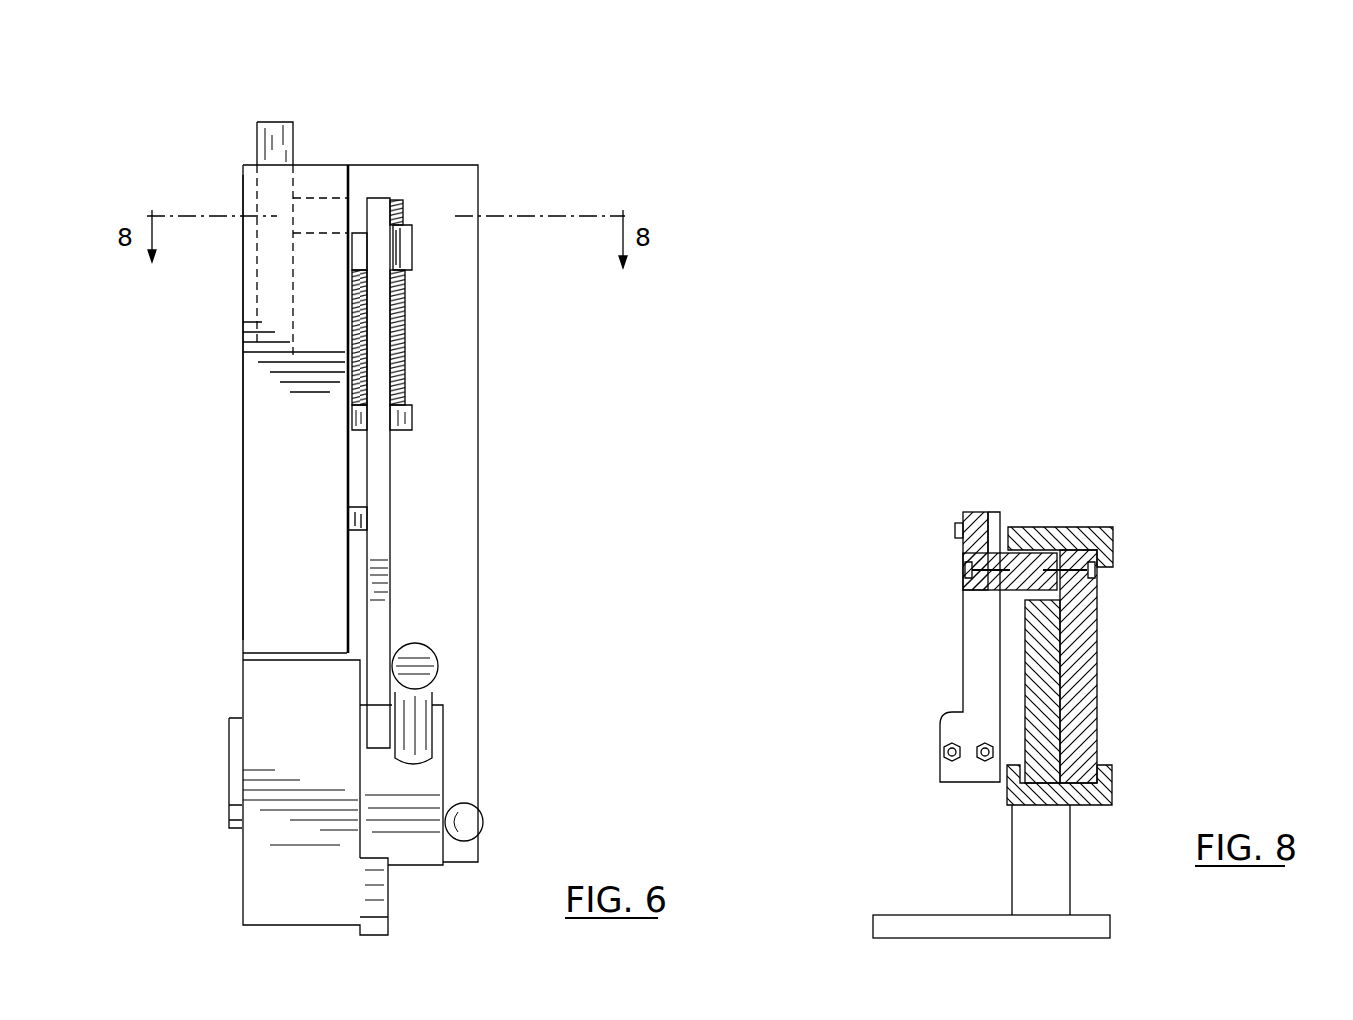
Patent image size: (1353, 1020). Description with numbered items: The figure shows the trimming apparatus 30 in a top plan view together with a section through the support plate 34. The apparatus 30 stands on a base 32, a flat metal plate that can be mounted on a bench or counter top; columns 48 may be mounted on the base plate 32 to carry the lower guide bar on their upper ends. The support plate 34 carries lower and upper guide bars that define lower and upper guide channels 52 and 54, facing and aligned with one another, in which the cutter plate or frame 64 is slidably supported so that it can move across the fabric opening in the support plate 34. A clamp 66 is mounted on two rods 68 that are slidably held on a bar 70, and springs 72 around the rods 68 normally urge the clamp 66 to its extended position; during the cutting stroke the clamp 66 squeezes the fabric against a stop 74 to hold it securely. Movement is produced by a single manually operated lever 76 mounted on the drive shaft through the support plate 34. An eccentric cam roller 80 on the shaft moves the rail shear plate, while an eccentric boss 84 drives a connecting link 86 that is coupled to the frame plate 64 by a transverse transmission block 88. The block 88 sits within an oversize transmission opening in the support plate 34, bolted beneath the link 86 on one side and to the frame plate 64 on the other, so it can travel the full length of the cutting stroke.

In FIG. 6, the trimming apparatus 30 is at (215, 450).
In FIG. 6, the base 32 is at (460, 248).
In FIG. 8, the support plate 34 is at (1082, 686).
In FIG. 8, the columns 48 is at (1027, 870).
In FIG. 8, the lower guide channel 52 is at (1112, 783).
In FIG. 6, the upper guide channel 54 is at (266, 515).
In FIG. 8, the upper guide channel 54 is at (1125, 530).
In FIG. 6, the cutter plate or frame 64 is at (257, 128).
In FIG. 8, the cutter plate or frame 64 is at (1082, 627).
In FIG. 6, the clamp 66 is at (412, 417).
In FIG. 6, the rods 68 is at (405, 213).
In FIG. 8, the rods 68 is at (983, 762).
In FIG. 8, the bar 70 is at (975, 692).
In FIG. 6, the springs 72 is at (405, 335).
In FIG. 6, the stop 74 is at (390, 530).
In FIG. 6, the lever 76 is at (425, 647).
In FIG. 6, the eccentric cam roller 80 is at (235, 765).
In FIG. 6, the eccentric boss 84 is at (420, 778).
In FIG. 6, the connecting link 86 is at (378, 470).
In FIG. 8, the connecting link 86 is at (975, 512).
In FIG. 6, the transverse transmission block 88 is at (358, 207).
In FIG. 8, the transverse transmission block 88 is at (1012, 590).